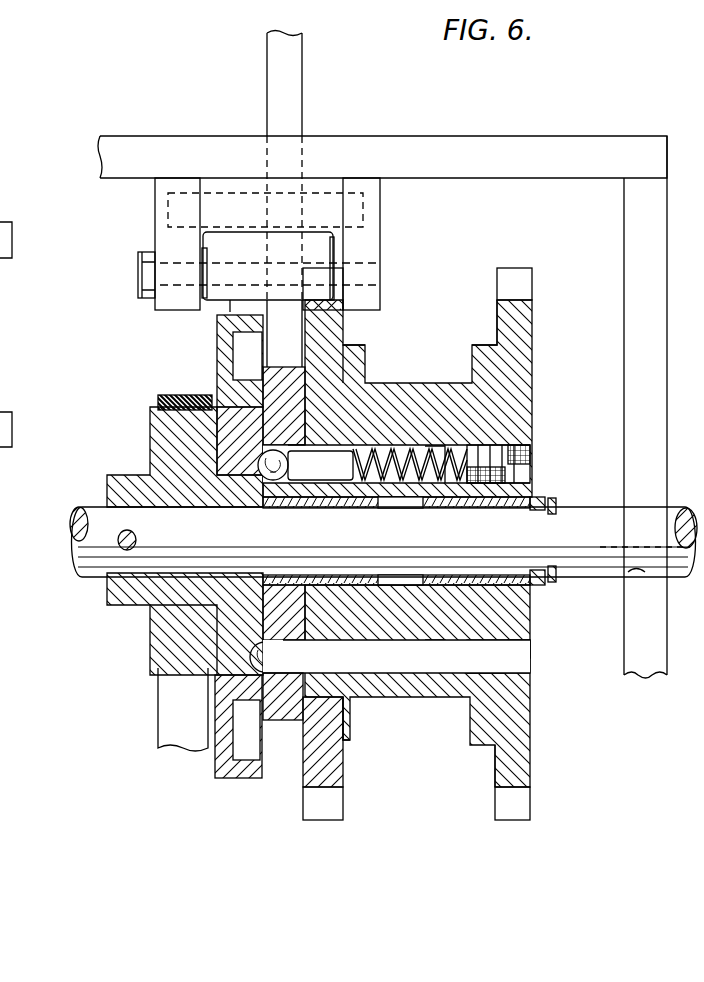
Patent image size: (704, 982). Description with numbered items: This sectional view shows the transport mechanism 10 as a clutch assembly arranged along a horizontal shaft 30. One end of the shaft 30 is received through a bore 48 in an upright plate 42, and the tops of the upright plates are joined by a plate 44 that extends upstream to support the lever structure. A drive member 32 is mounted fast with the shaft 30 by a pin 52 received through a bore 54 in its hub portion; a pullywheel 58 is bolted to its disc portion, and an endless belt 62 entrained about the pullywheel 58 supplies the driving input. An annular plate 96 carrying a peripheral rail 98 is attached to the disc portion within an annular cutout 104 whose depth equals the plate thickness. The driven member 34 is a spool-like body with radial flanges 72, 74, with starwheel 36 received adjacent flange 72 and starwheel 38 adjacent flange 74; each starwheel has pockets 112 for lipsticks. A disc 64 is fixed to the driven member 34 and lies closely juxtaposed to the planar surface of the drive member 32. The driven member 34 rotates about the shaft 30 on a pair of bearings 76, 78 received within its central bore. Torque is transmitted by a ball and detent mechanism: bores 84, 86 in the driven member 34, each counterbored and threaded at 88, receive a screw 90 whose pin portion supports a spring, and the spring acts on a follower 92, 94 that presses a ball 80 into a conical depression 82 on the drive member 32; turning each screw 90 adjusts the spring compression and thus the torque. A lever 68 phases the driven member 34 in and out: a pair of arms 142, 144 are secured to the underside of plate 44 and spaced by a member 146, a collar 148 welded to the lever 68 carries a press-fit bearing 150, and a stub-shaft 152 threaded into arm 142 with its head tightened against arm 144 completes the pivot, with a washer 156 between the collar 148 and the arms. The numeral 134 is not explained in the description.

The transport mechanism 10 is at (55, 605).
The shaft 30 is at (72, 558).
The drive member 32 is at (146, 475).
The driven member 34 is at (450, 722).
The starwheel 36 is at (518, 757).
The starwheel 38 is at (303, 777).
The plate 42 is at (631, 647).
The plate 44 is at (543, 136).
The bore 48 is at (627, 568).
The pin 52 is at (121, 530).
The bore 54 is at (110, 574).
The pullywheel 58 is at (165, 640).
The endless belt 62 is at (175, 720).
The disc 64 is at (288, 710).
The lever 68 is at (293, 123).
The flange 72 is at (482, 355).
The flange 74 is at (366, 354).
The bearing 76 is at (503, 503).
The bearing 78 is at (315, 503).
The ball 80 is at (258, 452).
The depression 82 is at (260, 470).
The bore 84 is at (405, 642).
The bore 86 is at (392, 453).
The counterbore 88 is at (449, 447).
The screw 90 is at (500, 453).
The follower 92 is at (312, 458).
The follower 94 is at (358, 714).
The plate 96 is at (228, 343).
The rail 98 is at (240, 774).
The annular cutout 104 is at (236, 396).
The pocket 112 is at (10, 222).
The spring end 134 is at (402, 453).
The arm 142 is at (368, 236).
The arm 144 is at (155, 208).
The member 146 is at (318, 210).
The collar 148 is at (220, 302).
The bearing 150 is at (230, 248).
The stub-shaft 152 is at (145, 282).
The washer 156 is at (200, 273).